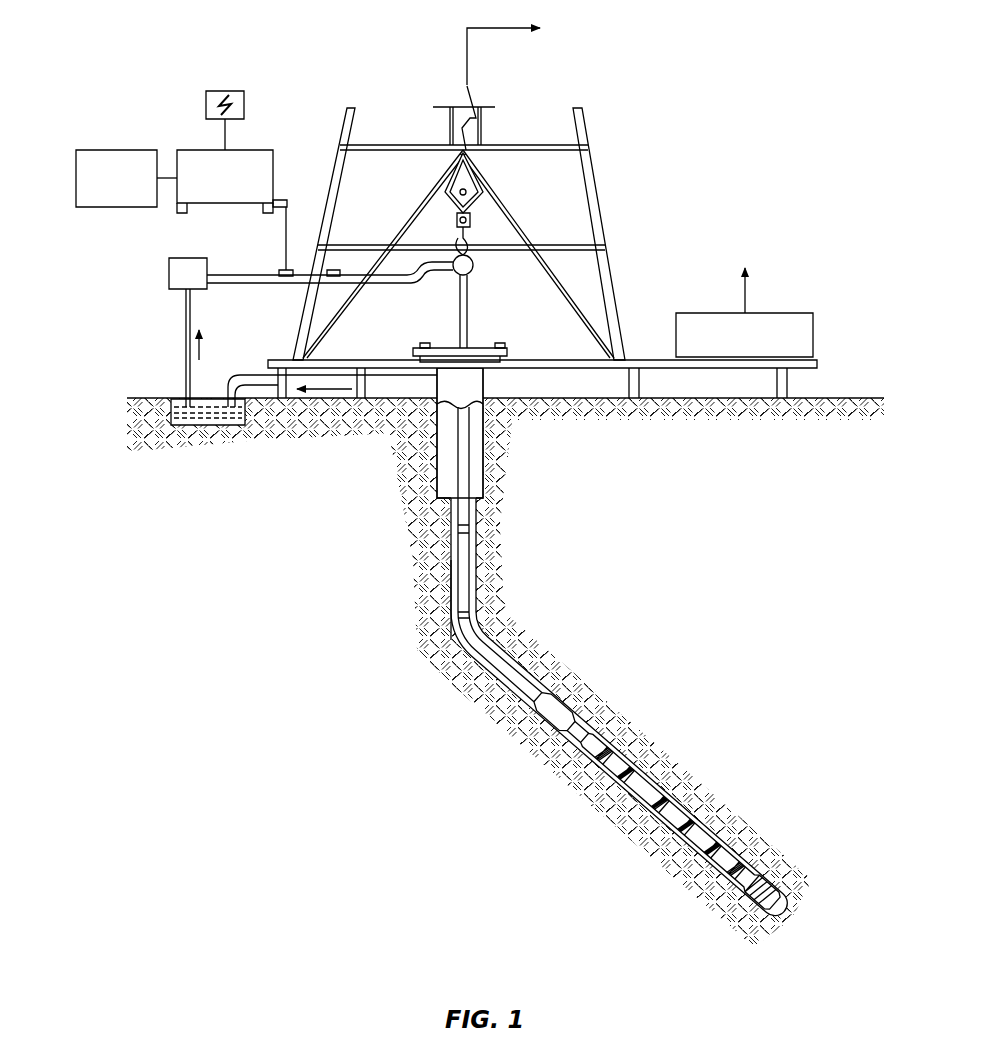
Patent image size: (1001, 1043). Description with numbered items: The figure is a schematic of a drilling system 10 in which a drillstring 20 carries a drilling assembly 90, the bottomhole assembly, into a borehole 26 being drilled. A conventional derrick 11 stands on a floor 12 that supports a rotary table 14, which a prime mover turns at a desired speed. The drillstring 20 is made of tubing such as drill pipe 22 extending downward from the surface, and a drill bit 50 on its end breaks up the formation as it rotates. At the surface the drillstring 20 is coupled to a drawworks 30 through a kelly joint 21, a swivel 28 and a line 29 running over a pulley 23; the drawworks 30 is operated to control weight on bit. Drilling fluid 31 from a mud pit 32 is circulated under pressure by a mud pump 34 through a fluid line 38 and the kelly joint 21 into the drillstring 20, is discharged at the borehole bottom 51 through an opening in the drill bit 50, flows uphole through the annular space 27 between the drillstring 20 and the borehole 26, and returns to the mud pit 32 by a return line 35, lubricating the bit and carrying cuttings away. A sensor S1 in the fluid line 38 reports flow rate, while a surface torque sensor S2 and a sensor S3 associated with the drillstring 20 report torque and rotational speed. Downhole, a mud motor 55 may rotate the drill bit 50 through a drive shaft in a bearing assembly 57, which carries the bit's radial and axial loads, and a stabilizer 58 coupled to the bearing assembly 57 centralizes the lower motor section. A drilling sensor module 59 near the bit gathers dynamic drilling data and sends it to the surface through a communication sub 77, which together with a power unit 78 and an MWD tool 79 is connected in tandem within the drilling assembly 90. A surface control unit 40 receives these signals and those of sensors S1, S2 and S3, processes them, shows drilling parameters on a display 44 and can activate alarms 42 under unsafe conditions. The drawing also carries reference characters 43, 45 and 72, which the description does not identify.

The drilling system 10 is at (388, 95).
The derrick 11 is at (603, 243).
The floor 12 is at (630, 358).
The rotary table 14 is at (482, 346).
The drillstring 20 is at (470, 565).
The kelly joint 21 is at (470, 293).
The drill pipe 22 is at (445, 553).
The pulley 23 is at (470, 192).
The borehole 26 is at (490, 637).
The annular space 27 is at (500, 660).
The swivel 28 is at (452, 275).
The line 29 is at (487, 128).
The drawworks 30 is at (792, 311).
The drilling fluid 31 is at (176, 413).
The mud pit 32 is at (197, 427).
The mud pump 34 is at (169, 272).
The return line 35 is at (378, 383).
The fluid line 38 is at (184, 346).
The surface control unit 40 is at (211, 149).
The alarms 42 is at (215, 90).
The sensor 43 is at (281, 271).
The display/monitor 44 is at (118, 149).
The data link 45 is at (283, 200).
The drill bit 50 is at (649, 837).
The borehole bottom 51 is at (753, 917).
The downhole motor 55 is at (643, 778).
The bearing assembly 57 is at (748, 848).
The stabilizer 58 is at (750, 868).
The drilling sensor module 59 is at (720, 910).
The annulus flow 72 is at (455, 637).
The communication sub 77 is at (538, 723).
The power unit 78 is at (468, 663).
The MWD tool 79 is at (490, 683).
The drilling assembly 90 is at (655, 675).
The sensor S1 is at (335, 270).
The surface torque sensor S2 is at (505, 344).
The sensor S3 is at (424, 344).